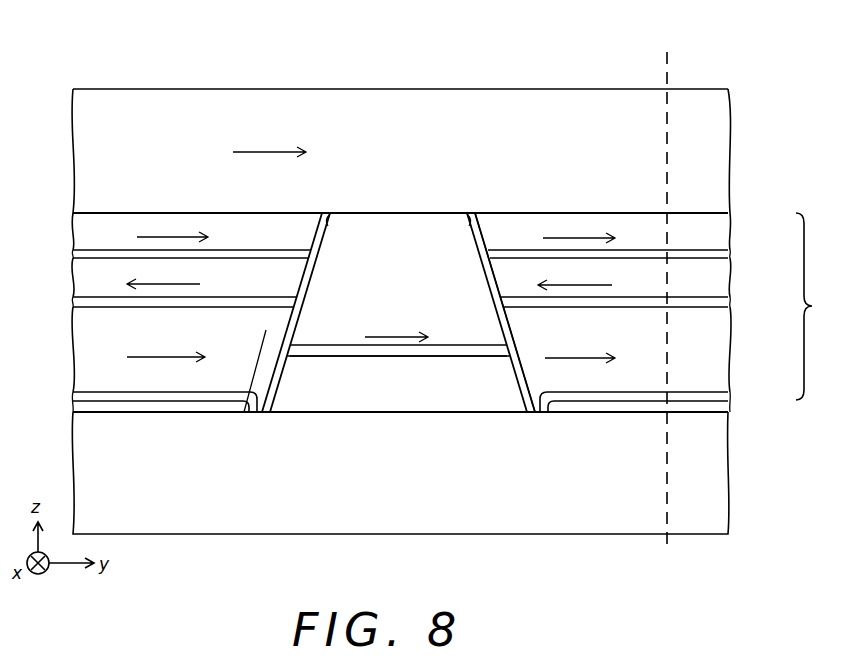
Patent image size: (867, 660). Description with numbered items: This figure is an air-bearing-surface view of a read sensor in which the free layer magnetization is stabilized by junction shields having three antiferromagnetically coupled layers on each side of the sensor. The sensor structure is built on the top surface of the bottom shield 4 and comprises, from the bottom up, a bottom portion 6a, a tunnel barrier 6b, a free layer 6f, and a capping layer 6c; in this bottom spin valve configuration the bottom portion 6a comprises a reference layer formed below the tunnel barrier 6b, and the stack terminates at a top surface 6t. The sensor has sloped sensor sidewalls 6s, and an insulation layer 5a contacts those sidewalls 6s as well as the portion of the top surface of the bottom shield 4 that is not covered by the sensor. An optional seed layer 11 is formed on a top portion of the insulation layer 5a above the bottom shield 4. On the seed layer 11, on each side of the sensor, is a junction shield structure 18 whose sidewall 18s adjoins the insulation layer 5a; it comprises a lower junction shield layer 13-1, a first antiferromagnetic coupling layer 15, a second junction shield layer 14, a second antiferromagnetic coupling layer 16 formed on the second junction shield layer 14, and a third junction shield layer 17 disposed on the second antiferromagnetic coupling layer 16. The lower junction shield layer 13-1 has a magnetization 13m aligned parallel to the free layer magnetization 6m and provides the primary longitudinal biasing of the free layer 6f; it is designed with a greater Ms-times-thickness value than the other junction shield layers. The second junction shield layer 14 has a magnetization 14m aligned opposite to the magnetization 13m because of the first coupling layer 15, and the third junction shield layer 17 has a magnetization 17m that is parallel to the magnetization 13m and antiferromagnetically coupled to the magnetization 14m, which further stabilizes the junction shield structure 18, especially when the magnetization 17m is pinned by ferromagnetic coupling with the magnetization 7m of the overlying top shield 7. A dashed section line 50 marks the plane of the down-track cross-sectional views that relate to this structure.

The bottom shield 4 is at (706, 481).
The insulation layer 5a is at (75, 406).
The bottom portion 6a is at (400, 390).
The tunnel barrier 6b is at (352, 352).
The capping layer 6c is at (373, 230).
The free layer 6f is at (323, 333).
The free layer magnetization 6m is at (398, 335).
The sensor sidewalls 6s is at (333, 218).
The gate top surface 6t is at (413, 212).
The upper magnetic layer 7 is at (708, 163).
The top shield magnetization 7m is at (269, 144).
The seed layer 11 is at (75, 386).
The lower junction shield layer 13-1 is at (75, 350).
The lower junction shield magnetization 13m is at (371, 350).
The second junction shield layer 14 is at (75, 279).
The second junction shield magnetization 14m is at (369, 277).
The first antiferromagnetic coupling layer 15 is at (75, 303).
The second antiferromagnetic coupling layer 16 is at (75, 254).
The third junction shield layer 17 is at (75, 229).
The third junction shield magnetization 17m is at (376, 230).
The junction shield structure 18 is at (819, 306).
The junction shield structure sidewall 18s is at (522, 352).
The section line 50 is at (667, 301).